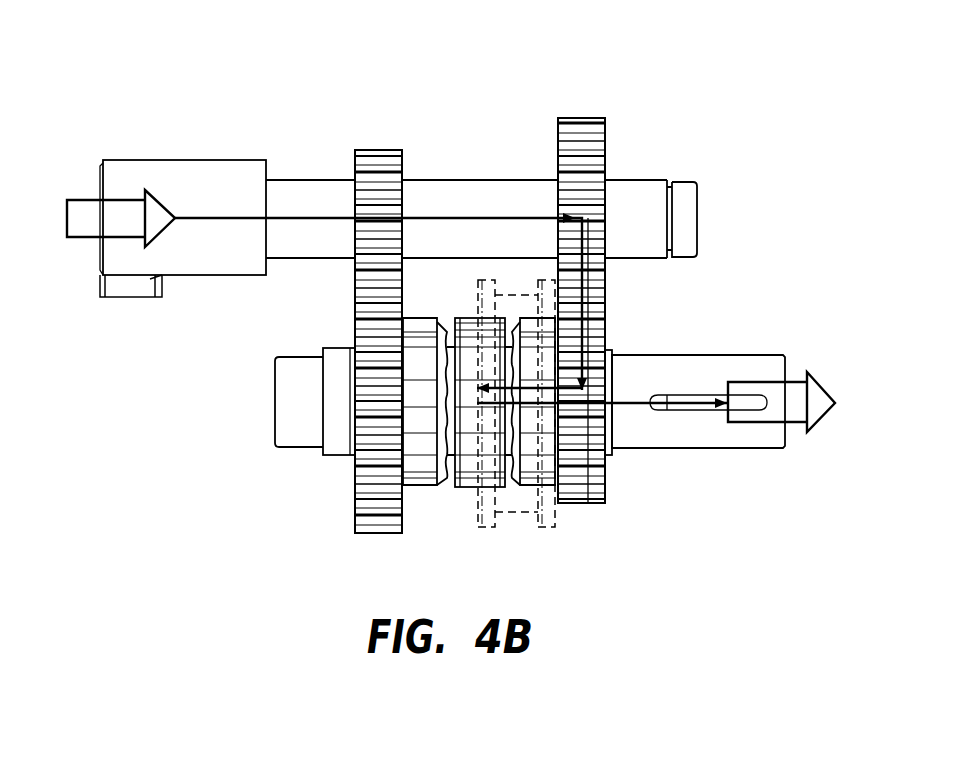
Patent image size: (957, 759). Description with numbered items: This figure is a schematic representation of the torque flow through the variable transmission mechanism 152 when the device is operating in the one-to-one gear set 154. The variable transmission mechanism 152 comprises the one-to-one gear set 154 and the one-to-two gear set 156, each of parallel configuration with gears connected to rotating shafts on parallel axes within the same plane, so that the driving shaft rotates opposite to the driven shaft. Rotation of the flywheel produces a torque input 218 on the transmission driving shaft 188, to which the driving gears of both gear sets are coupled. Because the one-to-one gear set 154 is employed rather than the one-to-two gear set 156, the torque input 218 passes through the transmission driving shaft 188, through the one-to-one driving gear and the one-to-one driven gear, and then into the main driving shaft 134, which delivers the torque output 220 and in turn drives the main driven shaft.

The variable transmission mechanism 152 is at (125, 102).
The 1:2 gear set 156 is at (377, 138).
The 1:1 gear set 154 is at (610, 120).
The transmission driving shaft 188 is at (652, 178).
The main driving shaft 134 is at (712, 355).
The torque input 218 is at (80, 238).
The torque output 220 is at (825, 414).